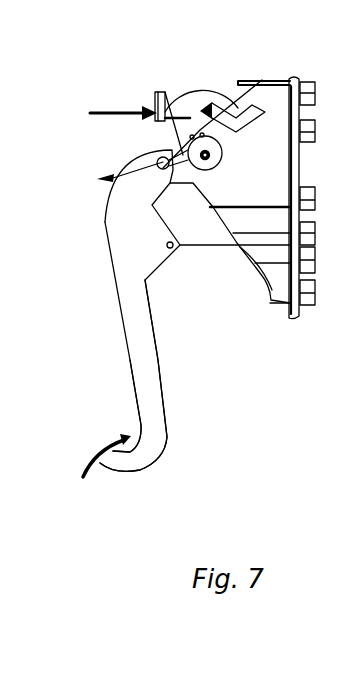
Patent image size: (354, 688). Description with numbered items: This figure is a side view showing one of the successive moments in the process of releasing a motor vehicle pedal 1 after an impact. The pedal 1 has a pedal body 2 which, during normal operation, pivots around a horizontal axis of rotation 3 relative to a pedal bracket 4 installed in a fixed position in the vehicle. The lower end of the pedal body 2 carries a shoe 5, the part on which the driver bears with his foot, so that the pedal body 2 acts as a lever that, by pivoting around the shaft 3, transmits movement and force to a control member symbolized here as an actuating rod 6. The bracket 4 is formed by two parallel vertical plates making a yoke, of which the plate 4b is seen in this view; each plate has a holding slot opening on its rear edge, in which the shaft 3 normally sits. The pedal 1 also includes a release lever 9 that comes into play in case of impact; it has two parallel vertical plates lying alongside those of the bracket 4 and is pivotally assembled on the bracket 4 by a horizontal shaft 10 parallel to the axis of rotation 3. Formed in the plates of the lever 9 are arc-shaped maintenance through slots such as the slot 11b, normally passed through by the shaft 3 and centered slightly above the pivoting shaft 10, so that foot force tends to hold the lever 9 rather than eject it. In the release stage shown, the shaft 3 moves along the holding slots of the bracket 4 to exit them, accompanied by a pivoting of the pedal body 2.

The motor vehicle pedal 1 is at (98, 337).
The pedal body 2 is at (163, 395).
The axis of rotation 3 is at (163, 168).
The pedal bracket 4 is at (271, 106).
The vertical plate 4b is at (272, 173).
The shoe 5 is at (90, 462).
The actuating rod 6 is at (203, 247).
The release lever 9 is at (162, 92).
The horizontal shaft 10 is at (232, 149).
The maintenance through slot 11b is at (182, 151).